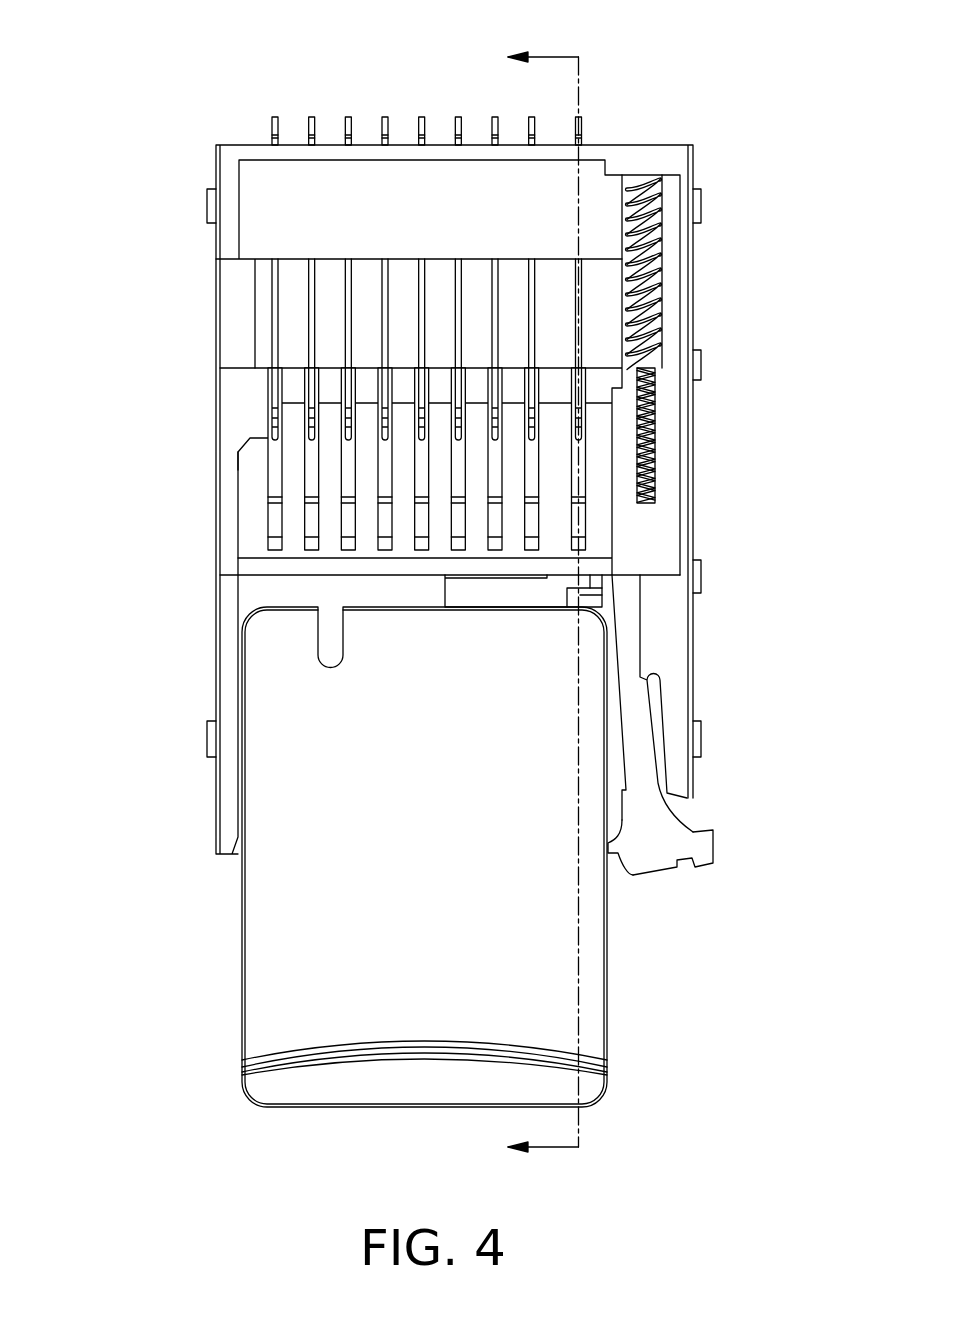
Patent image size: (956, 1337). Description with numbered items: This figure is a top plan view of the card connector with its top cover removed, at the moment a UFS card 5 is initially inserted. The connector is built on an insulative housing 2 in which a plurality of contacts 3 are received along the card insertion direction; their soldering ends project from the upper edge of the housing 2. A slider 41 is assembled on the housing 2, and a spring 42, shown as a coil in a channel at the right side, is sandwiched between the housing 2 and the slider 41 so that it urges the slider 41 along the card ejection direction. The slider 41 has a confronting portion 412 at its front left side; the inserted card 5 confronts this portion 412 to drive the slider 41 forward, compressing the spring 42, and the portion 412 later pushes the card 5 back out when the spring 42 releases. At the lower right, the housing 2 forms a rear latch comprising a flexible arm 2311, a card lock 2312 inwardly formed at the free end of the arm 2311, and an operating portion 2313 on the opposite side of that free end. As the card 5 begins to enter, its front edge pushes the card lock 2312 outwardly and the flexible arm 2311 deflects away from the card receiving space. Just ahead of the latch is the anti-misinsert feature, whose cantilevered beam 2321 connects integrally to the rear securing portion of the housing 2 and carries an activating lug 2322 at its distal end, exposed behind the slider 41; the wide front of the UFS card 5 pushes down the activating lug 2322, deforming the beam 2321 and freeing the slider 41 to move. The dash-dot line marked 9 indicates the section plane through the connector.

The insulative housing 2 is at (240, 292).
The contacts 3 is at (309, 118).
The UFS card 5 is at (287, 897).
The section line 9- 9 is at (543, 604).
The slider 41 is at (665, 482).
The confronting portion 412 is at (247, 443).
The spring 42 is at (648, 252).
The cantilevered beam 2321 is at (495, 590).
The activating lug 2322 is at (580, 595).
The flexible arm 2311 is at (633, 740).
The card lock 2312 is at (618, 850).
The operating portion 2313 is at (700, 847).